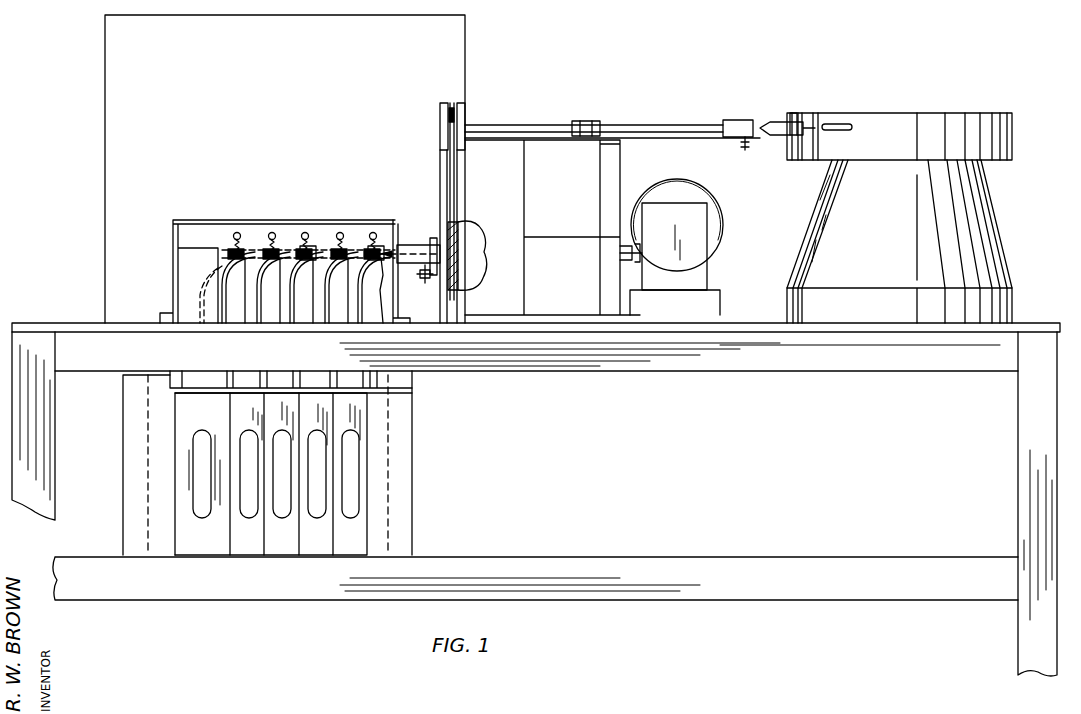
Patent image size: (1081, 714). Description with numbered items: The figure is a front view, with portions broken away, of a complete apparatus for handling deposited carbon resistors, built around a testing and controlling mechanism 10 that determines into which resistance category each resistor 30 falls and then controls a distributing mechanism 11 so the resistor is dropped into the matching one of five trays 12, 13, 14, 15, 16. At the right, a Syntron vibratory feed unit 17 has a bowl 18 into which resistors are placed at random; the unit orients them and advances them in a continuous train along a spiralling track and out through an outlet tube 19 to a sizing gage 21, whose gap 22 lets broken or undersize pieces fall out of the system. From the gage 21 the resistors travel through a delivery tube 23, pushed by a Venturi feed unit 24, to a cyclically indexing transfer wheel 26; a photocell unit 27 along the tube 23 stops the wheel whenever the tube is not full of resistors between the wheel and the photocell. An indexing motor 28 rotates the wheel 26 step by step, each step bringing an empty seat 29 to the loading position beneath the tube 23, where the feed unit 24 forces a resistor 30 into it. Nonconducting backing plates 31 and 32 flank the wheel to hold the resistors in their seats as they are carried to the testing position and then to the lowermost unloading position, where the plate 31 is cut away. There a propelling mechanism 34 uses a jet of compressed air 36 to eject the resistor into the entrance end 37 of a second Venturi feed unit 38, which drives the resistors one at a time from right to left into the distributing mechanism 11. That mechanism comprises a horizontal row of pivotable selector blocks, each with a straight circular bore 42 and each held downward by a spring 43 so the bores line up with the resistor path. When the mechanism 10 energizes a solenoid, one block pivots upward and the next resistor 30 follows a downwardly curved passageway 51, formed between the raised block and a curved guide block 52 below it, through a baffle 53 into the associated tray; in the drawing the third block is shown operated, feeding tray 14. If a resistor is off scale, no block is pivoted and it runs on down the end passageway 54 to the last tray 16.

The testing and controlling mechanism 10 is at (572, 229).
The distributing mechanism 11 is at (310, 208).
The tray 12 is at (357, 555).
The tray 13 is at (310, 555).
The tray 14 is at (277, 555).
The tray 15 is at (244, 555).
The tray 16 is at (207, 555).
The Syntron vibratory feed unit 17 is at (918, 111).
The bowl 18 is at (1000, 113).
The outlet tube 19 is at (845, 124).
The sizing gage 21 is at (774, 112).
The gap 22 is at (793, 118).
The delivery tube 23 is at (650, 125).
The Venturi feed unit 24 is at (745, 111).
The transfer wheel 26 is at (452, 103).
The photocell unit 27 is at (592, 115).
The indexing motor 28 is at (725, 222).
The resistor-receiving seat 29 is at (462, 278).
The resistor 30 is at (340, 250).
The backing plate 31 is at (440, 112).
The backing plate 32 is at (466, 110).
The propelling mechanism 34 is at (412, 242).
The jet of compressed air 36 is at (496, 245).
The entrance end 37 is at (432, 280).
The second Venturi feed unit 38 is at (422, 275).
The bore 42 is at (300, 248).
The spring 43 is at (272, 248).
The passageway 51 is at (281, 280).
The curved guide block 52 is at (357, 308).
The baffle 53 is at (273, 389).
The end passageway 54 is at (212, 280).